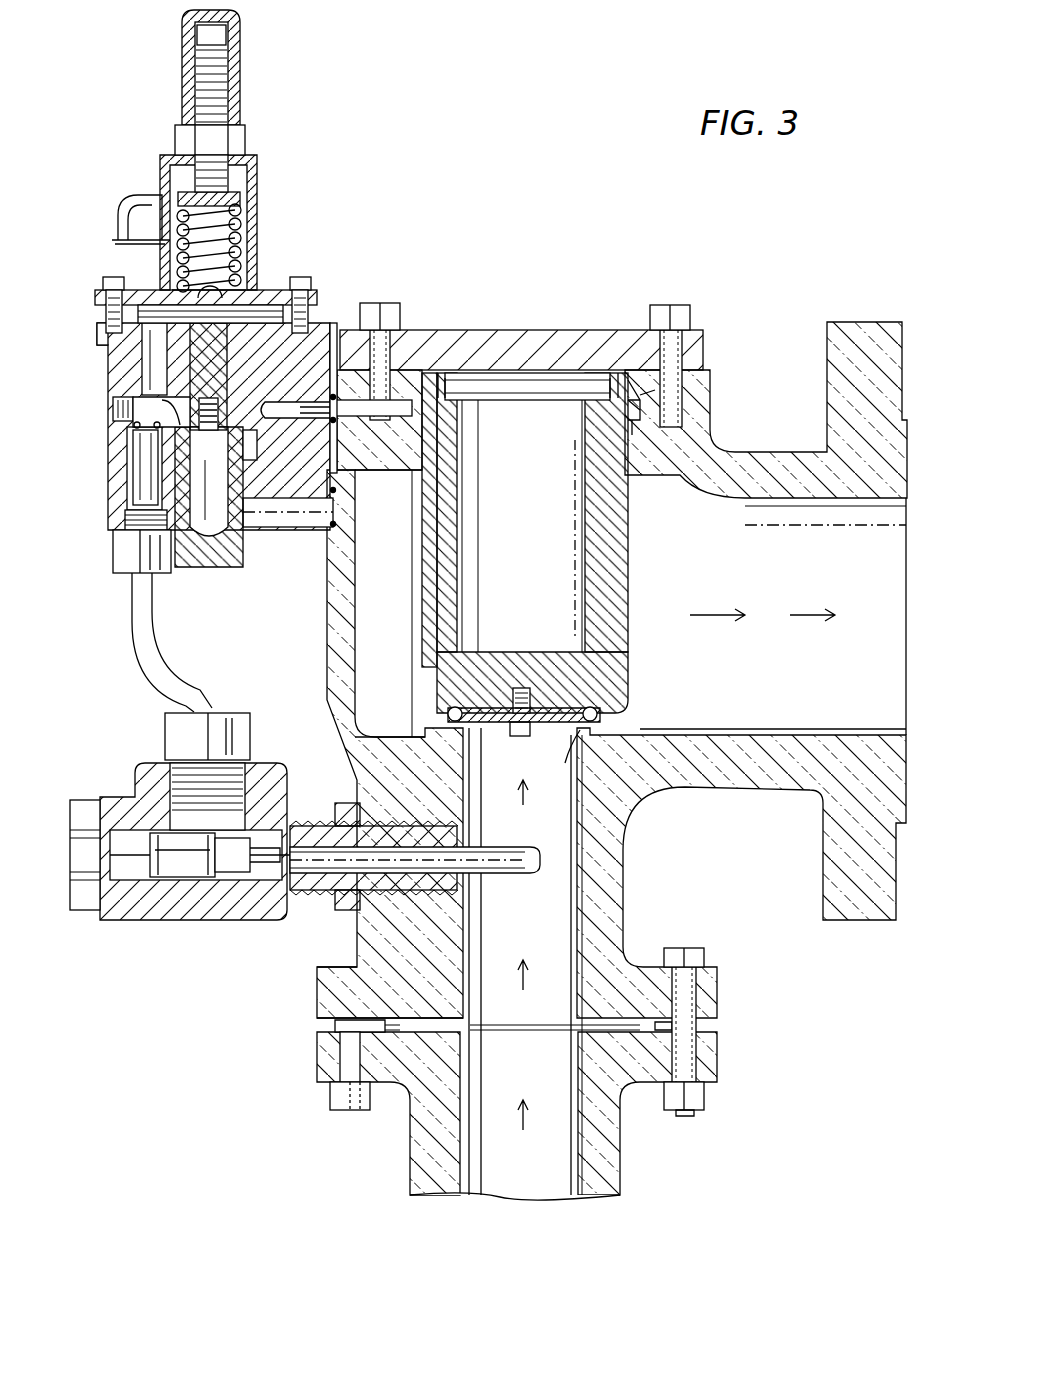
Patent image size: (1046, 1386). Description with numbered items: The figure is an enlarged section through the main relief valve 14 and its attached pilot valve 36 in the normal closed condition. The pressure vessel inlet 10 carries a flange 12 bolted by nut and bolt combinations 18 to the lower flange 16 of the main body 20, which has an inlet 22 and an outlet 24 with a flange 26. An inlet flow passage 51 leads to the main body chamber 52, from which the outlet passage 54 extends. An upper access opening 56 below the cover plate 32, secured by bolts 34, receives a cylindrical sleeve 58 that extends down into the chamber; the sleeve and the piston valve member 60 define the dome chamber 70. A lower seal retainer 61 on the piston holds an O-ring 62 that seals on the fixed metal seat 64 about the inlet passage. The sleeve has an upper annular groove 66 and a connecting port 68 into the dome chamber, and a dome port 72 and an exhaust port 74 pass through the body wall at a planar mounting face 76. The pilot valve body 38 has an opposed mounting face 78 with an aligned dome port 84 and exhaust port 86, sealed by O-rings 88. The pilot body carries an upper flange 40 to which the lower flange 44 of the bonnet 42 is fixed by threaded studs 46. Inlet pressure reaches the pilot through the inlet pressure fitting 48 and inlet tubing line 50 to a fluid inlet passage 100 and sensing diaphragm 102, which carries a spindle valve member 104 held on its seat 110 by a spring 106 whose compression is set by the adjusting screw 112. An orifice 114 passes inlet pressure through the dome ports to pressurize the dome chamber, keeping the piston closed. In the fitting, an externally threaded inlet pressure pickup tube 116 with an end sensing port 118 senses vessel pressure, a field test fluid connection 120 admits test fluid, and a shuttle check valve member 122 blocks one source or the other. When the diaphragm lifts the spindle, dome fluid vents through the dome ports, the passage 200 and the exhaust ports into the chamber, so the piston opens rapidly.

The inlet 10 is at (407, 1170).
The flange 12 is at (322, 1066).
The main relief valve 14 is at (553, 306).
The lower flange 16 is at (320, 1006).
The nut and bolt combinations 18 is at (708, 953).
The main body 20 is at (336, 626).
The inlet 22 is at (625, 887).
The outlet 24 is at (762, 788).
The flange 26 is at (860, 322).
The upper cover plate 32 is at (462, 330).
The bolts 34 is at (685, 305).
The pilot valve 36 is at (300, 585).
The body 38 is at (338, 370).
The upper flange 40 is at (108, 333).
The bonnet 42 is at (257, 240).
The lower flange 44 is at (268, 290).
The threaded studs 46 is at (310, 285).
The inlet pressure fitting 48 is at (128, 922).
The inlet tubing line 50 is at (168, 655).
The inlet flow passage 51 is at (516, 950).
The main body chamber 52 is at (400, 653).
The outlet passage 54 is at (776, 585).
The upper access opening 56 is at (613, 470).
The sleeve 58 is at (422, 565).
The piston valve member 60 is at (442, 688).
The lower seal retainer 61 is at (490, 730).
The O-ring 62 is at (600, 702).
The fixed metal seat 64 is at (556, 757).
The annular groove 66 is at (650, 410).
The connecting port 68 is at (600, 380).
The dome chamber 70 is at (538, 455).
The dome port 72 is at (360, 470).
The exhaust port 74 is at (353, 509).
The mounting face 76 is at (295, 510).
The mounting face 78 is at (340, 470).
The dome port 84 is at (310, 425).
The exhaust port 86 is at (316, 520).
The O-rings 88 is at (400, 305).
The fluid inlet passage 100 is at (140, 530).
The sensing diaphragm 102 is at (150, 290).
The spindle valve member 104 is at (195, 400).
The spring 106 is at (240, 215).
The seat 110 is at (158, 445).
The adjusting screw 112 is at (240, 80).
The orifice 114 is at (160, 425).
The inlet pressure pickup tube 116 is at (335, 890).
The end sensing port 118 is at (524, 878).
The field test fluid connection 120 is at (97, 748).
The shuttle check valve member 122 is at (188, 880).
The passage 200 is at (210, 567).